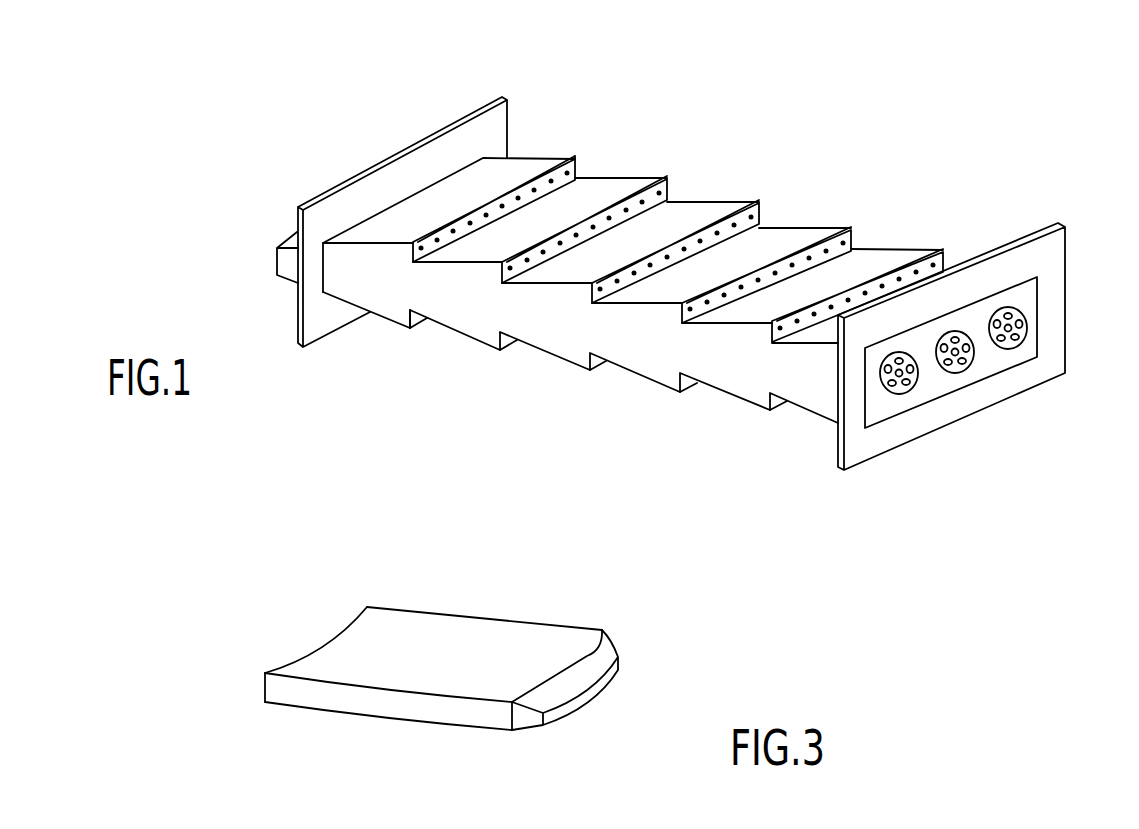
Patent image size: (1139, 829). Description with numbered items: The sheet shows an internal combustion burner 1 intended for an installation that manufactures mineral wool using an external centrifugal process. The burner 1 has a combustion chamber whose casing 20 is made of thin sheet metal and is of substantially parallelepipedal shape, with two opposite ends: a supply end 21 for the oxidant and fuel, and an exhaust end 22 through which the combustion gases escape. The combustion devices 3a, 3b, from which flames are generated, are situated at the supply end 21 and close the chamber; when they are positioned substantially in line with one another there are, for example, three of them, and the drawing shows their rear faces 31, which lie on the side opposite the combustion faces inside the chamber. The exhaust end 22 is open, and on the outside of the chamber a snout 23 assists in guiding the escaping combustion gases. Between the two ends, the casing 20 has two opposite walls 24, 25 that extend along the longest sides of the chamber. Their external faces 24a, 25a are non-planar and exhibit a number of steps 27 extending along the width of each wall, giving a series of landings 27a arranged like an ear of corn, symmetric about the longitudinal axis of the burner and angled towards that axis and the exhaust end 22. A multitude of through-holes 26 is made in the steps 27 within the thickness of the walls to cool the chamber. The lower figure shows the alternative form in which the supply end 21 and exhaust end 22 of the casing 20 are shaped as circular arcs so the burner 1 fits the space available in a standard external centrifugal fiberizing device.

In FIG. 1, the internal combustion burner 1 is at (447, 432).
In FIG. 3, the internal combustion burner 1 is at (397, 768).
In FIG. 1, the casing 20 is at (733, 378).
In FIG. 3, the casing 20 is at (465, 640).
In FIG. 1, the supply end 21 is at (1053, 284).
In FIG. 3, the supply end 21 is at (330, 640).
In FIG. 1, the exhaust end 22 is at (392, 178).
In FIG. 3, the exhaust end 22 is at (587, 655).
In FIG. 1, the snout 23 is at (282, 267).
In FIG. 3, the snout 23 is at (607, 653).
In FIG. 1, the wall 24 is at (878, 249).
In FIG. 1, the external face 24a is at (540, 158).
In FIG. 1, the wall 25 is at (555, 356).
In FIG. 1, the external face 25a is at (460, 333).
In FIG. 1, the through-holes 26 is at (783, 268).
In FIG. 1, the steps 27 is at (645, 193).
In FIG. 1, the landings 27a is at (588, 198).
In FIG. 1, the rear faces 31 is at (884, 383).
In FIG. 1, the combustion device 3a is at (961, 375).
In FIG. 1, the combustion device 3b is at (903, 395).